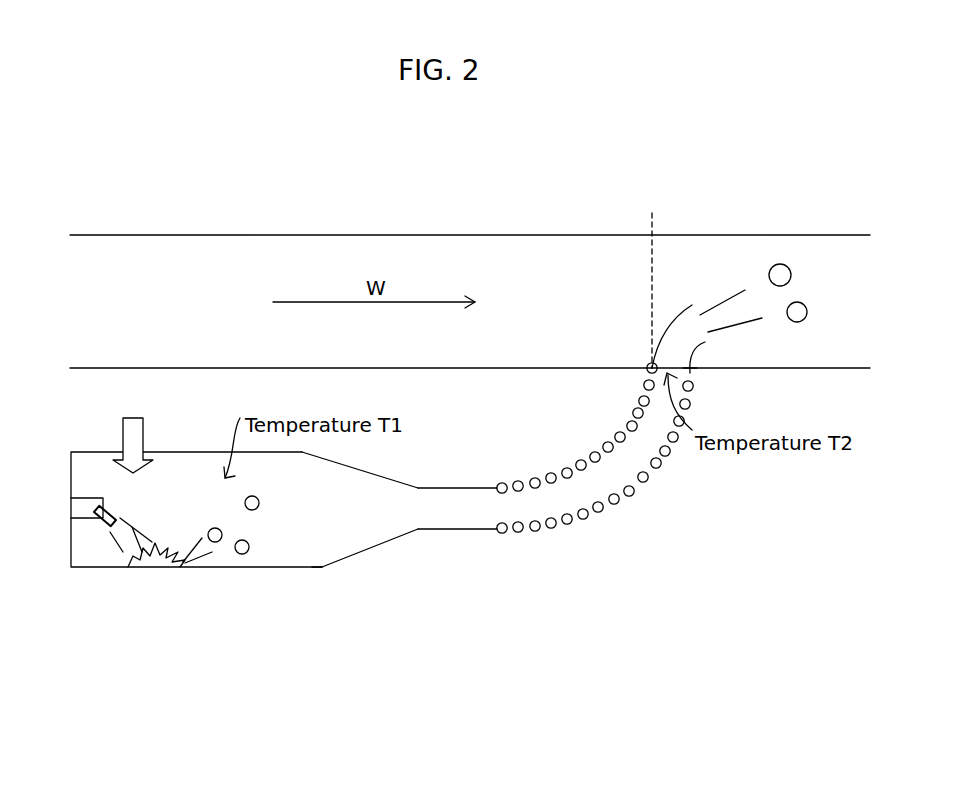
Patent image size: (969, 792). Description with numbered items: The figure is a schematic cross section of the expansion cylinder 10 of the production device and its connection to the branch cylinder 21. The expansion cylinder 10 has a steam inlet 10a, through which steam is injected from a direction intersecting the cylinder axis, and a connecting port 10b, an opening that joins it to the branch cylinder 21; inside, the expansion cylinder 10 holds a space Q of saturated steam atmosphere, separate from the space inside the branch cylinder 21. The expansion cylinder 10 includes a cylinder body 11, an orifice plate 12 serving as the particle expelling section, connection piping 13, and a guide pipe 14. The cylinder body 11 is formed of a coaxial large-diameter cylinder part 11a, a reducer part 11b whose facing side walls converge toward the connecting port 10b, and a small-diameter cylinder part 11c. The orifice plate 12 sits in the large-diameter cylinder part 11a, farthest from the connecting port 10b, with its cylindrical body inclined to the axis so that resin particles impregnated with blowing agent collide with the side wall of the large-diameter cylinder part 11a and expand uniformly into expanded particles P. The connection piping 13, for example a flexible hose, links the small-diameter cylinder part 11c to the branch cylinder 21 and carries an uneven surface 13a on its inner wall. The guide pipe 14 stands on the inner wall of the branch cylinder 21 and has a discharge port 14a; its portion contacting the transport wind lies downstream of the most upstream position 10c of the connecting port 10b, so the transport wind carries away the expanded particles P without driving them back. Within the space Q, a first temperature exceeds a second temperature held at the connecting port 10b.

The expansion cylinder 10 is at (88, 643).
The steam inlet 10a is at (148, 450).
The connecting port 10b is at (690, 383).
The most upstream position 10c is at (653, 278).
The cylinder body 11 is at (145, 568).
The large-diameter cylinder part 11a is at (190, 567).
The reducer part 11b is at (367, 549).
The small-diameter cylinder part 11c is at (443, 529).
The orifice plate 12 is at (87, 519).
The connection piping 13 is at (573, 460).
The uneven surface 13a is at (657, 465).
The guide pipe 14 is at (680, 307).
The discharge port 14a is at (705, 342).
The branch cylinder 21 is at (418, 235).
The expanded particles P is at (242, 554).
The space Q is at (318, 560).